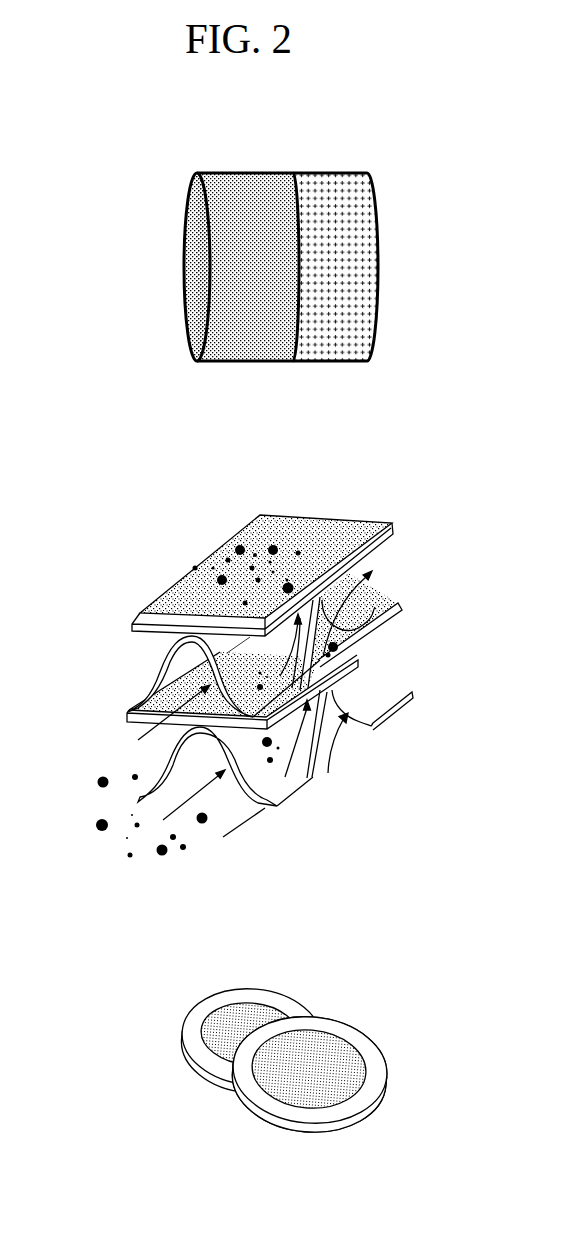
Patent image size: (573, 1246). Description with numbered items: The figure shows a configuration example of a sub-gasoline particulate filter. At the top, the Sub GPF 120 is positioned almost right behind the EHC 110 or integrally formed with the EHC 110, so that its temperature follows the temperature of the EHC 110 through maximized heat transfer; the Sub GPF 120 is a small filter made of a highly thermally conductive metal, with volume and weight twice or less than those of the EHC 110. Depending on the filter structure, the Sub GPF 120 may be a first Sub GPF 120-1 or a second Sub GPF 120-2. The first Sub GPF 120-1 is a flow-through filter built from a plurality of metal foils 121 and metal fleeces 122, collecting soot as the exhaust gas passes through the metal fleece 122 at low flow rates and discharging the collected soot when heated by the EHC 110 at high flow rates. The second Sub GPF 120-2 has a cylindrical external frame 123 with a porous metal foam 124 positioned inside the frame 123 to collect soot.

The EHC 110 is at (242, 177).
The Sub GPF 120 is at (323, 179).
The first Sub GPF 120-1 is at (145, 543).
The metal foil 121 is at (375, 608).
The metal fleece 122 is at (392, 523).
The second Sub GPF 120-2 is at (155, 993).
The external frame 123 is at (373, 1062).
The metal foam 124 is at (315, 1040).